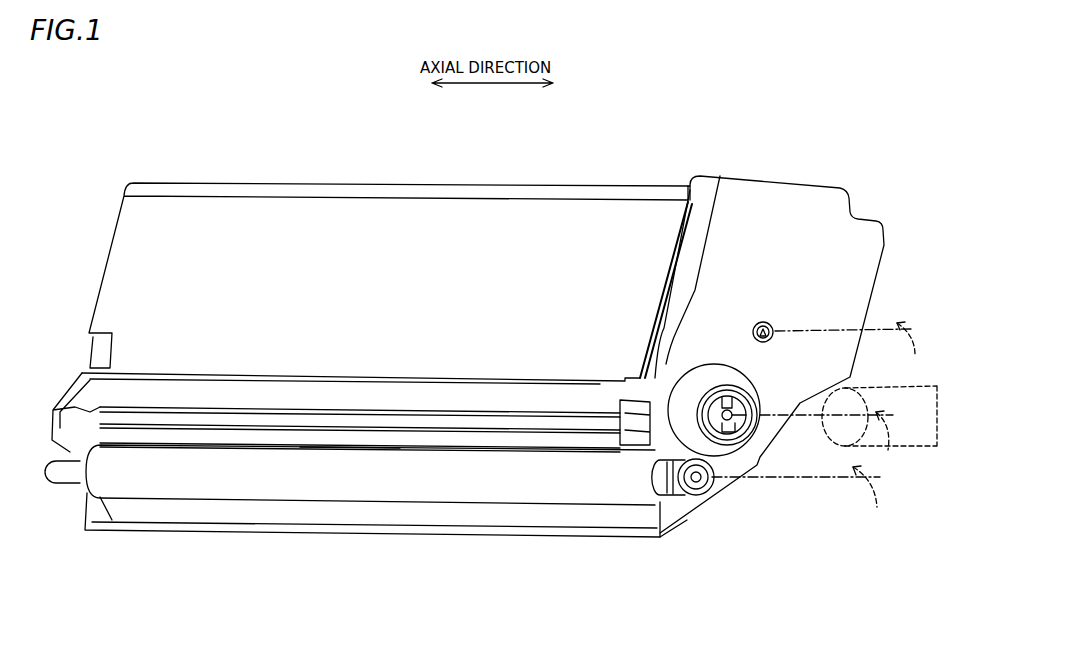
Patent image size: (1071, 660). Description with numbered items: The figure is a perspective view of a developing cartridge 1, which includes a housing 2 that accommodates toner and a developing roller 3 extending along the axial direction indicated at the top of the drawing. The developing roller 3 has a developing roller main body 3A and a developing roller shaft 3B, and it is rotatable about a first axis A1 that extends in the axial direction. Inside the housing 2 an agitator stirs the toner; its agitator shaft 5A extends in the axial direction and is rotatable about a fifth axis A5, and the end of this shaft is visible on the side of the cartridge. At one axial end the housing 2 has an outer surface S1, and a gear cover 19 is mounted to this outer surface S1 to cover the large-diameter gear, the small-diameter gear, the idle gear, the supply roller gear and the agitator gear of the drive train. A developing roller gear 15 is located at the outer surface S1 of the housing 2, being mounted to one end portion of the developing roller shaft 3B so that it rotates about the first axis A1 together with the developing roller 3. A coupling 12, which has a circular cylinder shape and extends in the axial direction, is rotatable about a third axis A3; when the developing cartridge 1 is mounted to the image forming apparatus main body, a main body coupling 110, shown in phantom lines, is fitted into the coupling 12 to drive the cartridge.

The developing cartridge 1 is at (440, 592).
The housing 2 is at (488, 225).
The developing roller 3 is at (303, 492).
The developing roller main body 3A is at (345, 486).
The developing roller shaft 3B is at (697, 492).
The agitator shaft 5A is at (766, 322).
The coupling 12 is at (720, 382).
The developing roller gear 15 is at (680, 492).
The gear cover 19 is at (776, 203).
The main body coupling 110 is at (925, 447).
The outer surface S1 is at (688, 182).
The first axis A1 is at (872, 494).
The third axis A3 is at (895, 440).
The fifth axis A5 is at (912, 349).